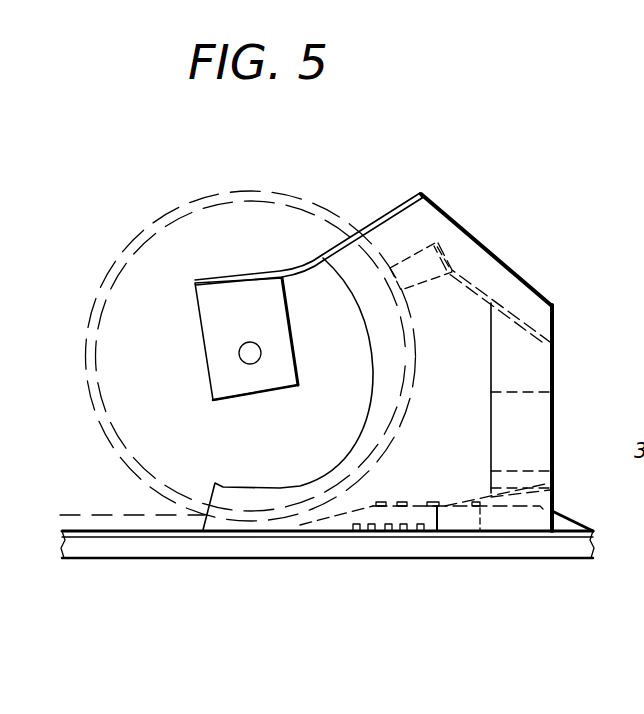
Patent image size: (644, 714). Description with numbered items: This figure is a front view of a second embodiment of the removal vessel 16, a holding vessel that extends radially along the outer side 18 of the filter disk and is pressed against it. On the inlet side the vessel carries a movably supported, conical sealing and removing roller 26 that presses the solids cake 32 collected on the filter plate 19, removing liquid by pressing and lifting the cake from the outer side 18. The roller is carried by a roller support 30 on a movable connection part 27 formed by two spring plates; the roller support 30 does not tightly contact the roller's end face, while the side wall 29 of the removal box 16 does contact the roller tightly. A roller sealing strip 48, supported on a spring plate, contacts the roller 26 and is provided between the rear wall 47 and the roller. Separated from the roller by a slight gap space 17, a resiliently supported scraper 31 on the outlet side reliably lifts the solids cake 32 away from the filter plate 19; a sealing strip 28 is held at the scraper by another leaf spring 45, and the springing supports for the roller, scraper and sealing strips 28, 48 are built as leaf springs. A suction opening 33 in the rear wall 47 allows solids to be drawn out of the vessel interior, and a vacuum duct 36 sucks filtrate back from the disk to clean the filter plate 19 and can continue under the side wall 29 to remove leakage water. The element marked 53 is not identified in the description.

The removal vessel 16 is at (470, 220).
The gap space 17 is at (317, 525).
The outer side of the filter disk 18 is at (94, 530).
The filter plate 19 is at (573, 545).
The sealing and removing roller 26 is at (167, 262).
The connection part 27 is at (313, 257).
The sealing strip 28 is at (516, 518).
The side wall 29 is at (478, 261).
The roller support 30 is at (237, 313).
The scraper 31 is at (343, 527).
The solids cake 32 is at (137, 522).
The suction opening 33 is at (533, 437).
The vacuum duct 36 is at (448, 517).
The leaf spring 45 is at (466, 503).
The rear wall 47 is at (523, 362).
The roller sealing strip 48 is at (415, 272).
The upper cross member 53 is at (447, 367).